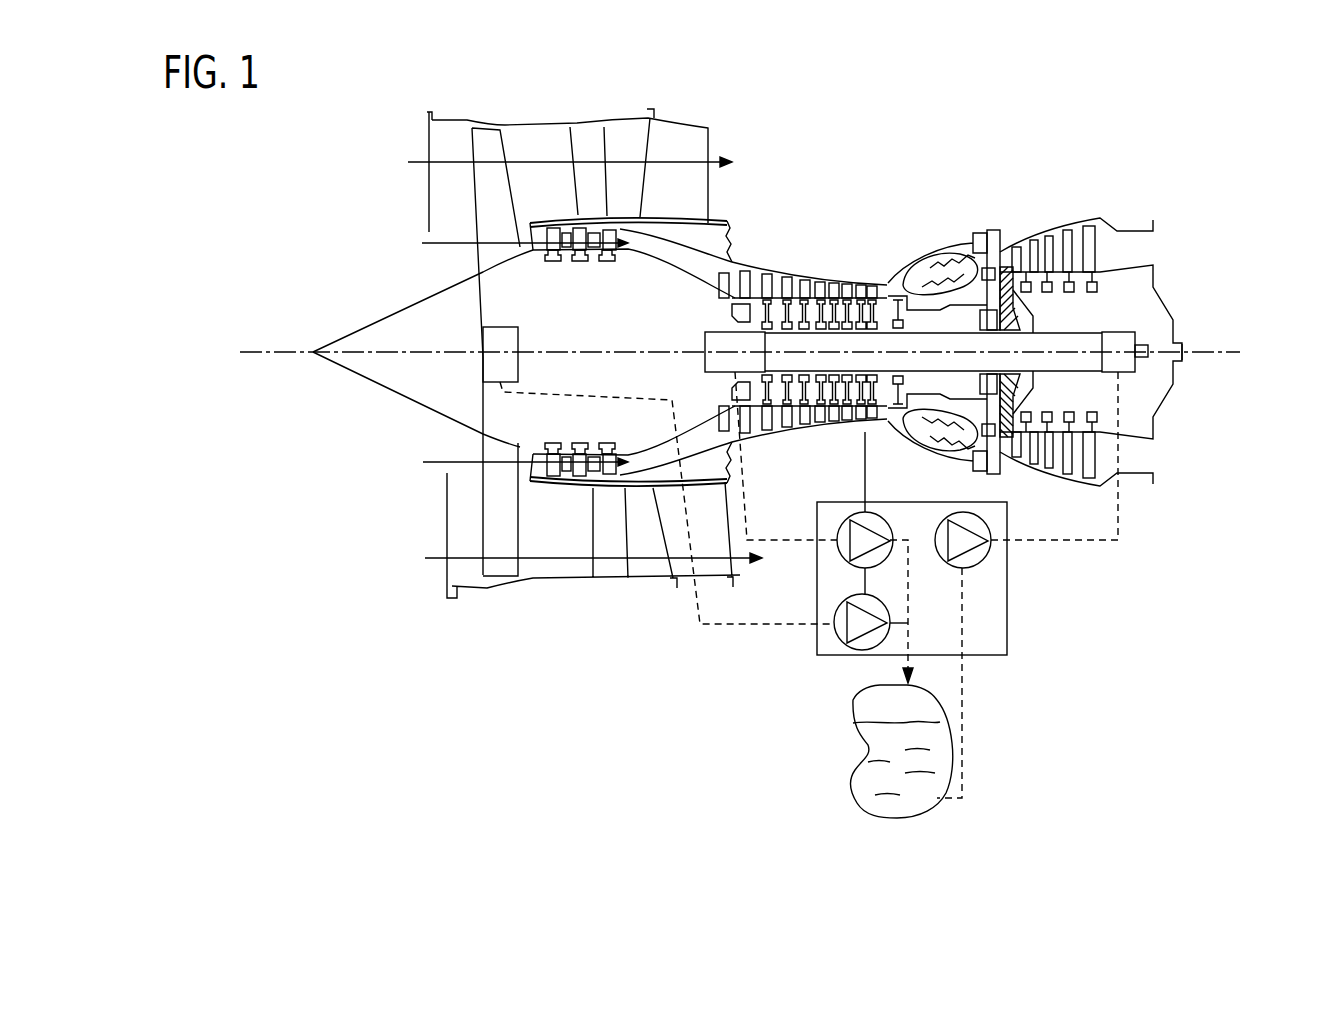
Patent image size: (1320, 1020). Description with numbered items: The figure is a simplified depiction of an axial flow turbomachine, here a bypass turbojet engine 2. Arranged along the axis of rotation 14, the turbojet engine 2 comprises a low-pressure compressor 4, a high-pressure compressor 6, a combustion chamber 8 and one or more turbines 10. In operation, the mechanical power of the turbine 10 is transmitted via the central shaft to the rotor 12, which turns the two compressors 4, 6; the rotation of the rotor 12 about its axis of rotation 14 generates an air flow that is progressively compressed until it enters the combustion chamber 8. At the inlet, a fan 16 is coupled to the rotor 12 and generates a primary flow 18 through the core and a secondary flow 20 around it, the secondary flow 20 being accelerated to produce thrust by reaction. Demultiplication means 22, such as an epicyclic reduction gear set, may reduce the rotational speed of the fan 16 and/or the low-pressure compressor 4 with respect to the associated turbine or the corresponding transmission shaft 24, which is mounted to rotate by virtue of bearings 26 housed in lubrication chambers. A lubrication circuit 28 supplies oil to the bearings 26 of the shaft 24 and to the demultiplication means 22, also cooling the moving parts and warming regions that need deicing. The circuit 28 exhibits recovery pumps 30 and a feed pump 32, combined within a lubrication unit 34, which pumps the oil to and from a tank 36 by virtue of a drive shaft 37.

The turbojet engine 2 is at (897, 148).
The low-pressure compressor 4 is at (582, 262).
The high-pressure compressor 6 is at (789, 277).
The combustion chamber 8 is at (953, 268).
The turbine 10 is at (1075, 237).
The rotor 12 is at (1033, 338).
The axis of rotation 14 is at (615, 350).
The fan 16 is at (492, 190).
The primary flow 18 is at (510, 352).
The secondary flow 20 is at (571, 359).
The demultiplication means 22 is at (487, 342).
The transmission shaft 24 is at (889, 345).
The bearings 26 is at (708, 345).
The lubrication circuit 28 is at (1062, 710).
The recovery pump 30 is at (842, 527).
The feed pump 32 is at (973, 567).
The lubrication unit 34 is at (955, 615).
The tank 36 is at (868, 751).
The drive shaft 37 is at (868, 470).